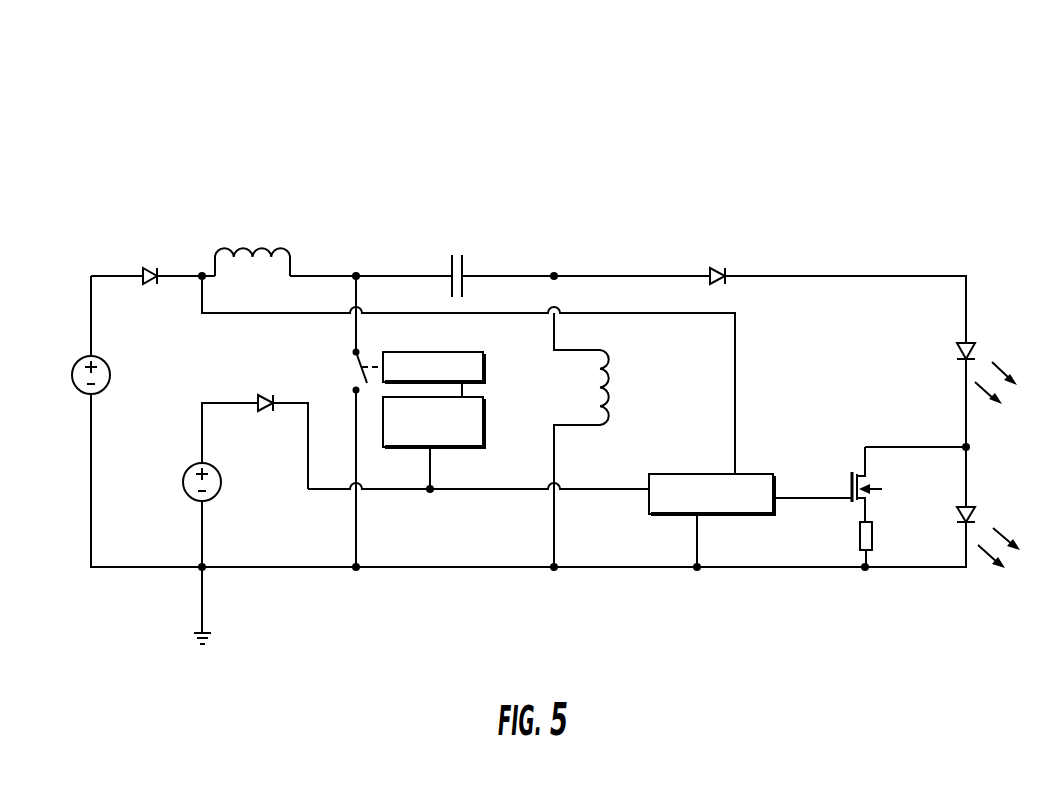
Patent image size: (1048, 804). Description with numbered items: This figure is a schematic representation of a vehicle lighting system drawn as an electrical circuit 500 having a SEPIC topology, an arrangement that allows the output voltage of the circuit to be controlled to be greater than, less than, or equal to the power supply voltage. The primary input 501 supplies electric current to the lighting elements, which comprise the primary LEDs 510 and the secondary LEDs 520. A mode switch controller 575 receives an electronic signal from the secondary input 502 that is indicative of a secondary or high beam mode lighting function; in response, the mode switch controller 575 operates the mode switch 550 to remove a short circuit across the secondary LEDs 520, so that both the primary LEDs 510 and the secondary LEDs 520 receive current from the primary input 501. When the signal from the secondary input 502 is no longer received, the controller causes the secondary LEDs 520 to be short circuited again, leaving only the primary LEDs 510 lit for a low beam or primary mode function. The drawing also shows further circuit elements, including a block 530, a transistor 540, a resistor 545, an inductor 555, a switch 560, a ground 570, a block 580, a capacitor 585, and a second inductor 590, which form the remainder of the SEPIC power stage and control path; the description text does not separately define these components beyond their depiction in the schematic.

The electrical circuit 500 is at (830, 108).
The primary input 501 is at (74, 417).
The secondary input 502 is at (191, 524).
The primary LEDs 510 is at (1029, 351).
The secondary LEDs 520 is at (1029, 516).
The controller 530 is at (633, 541).
The transistor 540 is at (850, 484).
The resistor 545 is at (850, 537).
The mode switch 550 is at (153, 265).
The inductor 555 is at (242, 246).
The switch 560 is at (363, 369).
The ground 570 is at (219, 678).
The mode switch controller 575 is at (483, 426).
The sensing block 580 is at (483, 371).
The capacitor 585 is at (462, 262).
The inductor 590 is at (609, 393).